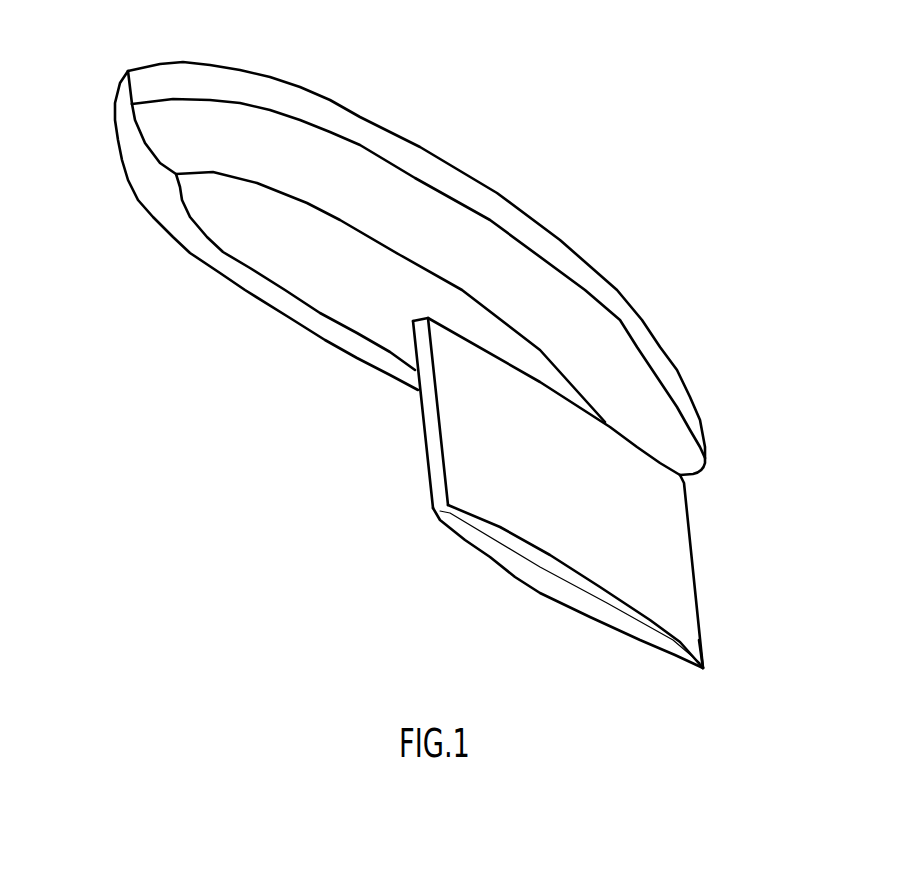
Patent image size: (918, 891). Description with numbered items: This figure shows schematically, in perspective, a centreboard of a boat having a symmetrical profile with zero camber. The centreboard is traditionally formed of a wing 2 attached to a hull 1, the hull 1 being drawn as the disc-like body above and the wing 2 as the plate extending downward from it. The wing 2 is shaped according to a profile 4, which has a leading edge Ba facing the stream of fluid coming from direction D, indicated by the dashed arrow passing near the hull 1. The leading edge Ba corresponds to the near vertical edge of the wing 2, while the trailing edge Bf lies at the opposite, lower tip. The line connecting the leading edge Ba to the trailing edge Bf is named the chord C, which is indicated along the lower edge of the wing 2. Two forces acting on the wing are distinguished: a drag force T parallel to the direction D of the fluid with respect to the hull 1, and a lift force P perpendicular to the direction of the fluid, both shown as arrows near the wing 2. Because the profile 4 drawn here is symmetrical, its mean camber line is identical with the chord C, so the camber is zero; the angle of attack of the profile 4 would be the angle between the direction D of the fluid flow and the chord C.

The hull 1 is at (388, 273).
The wing 2 is at (457, 425).
The profile 4 is at (490, 550).
The leading edge Ba is at (432, 507).
The trailing edge Bf is at (704, 668).
The chord C is at (531, 566).
The direction of the fluid D is at (350, 292).
The lift force P is at (553, 473).
The drag force T is at (692, 562).